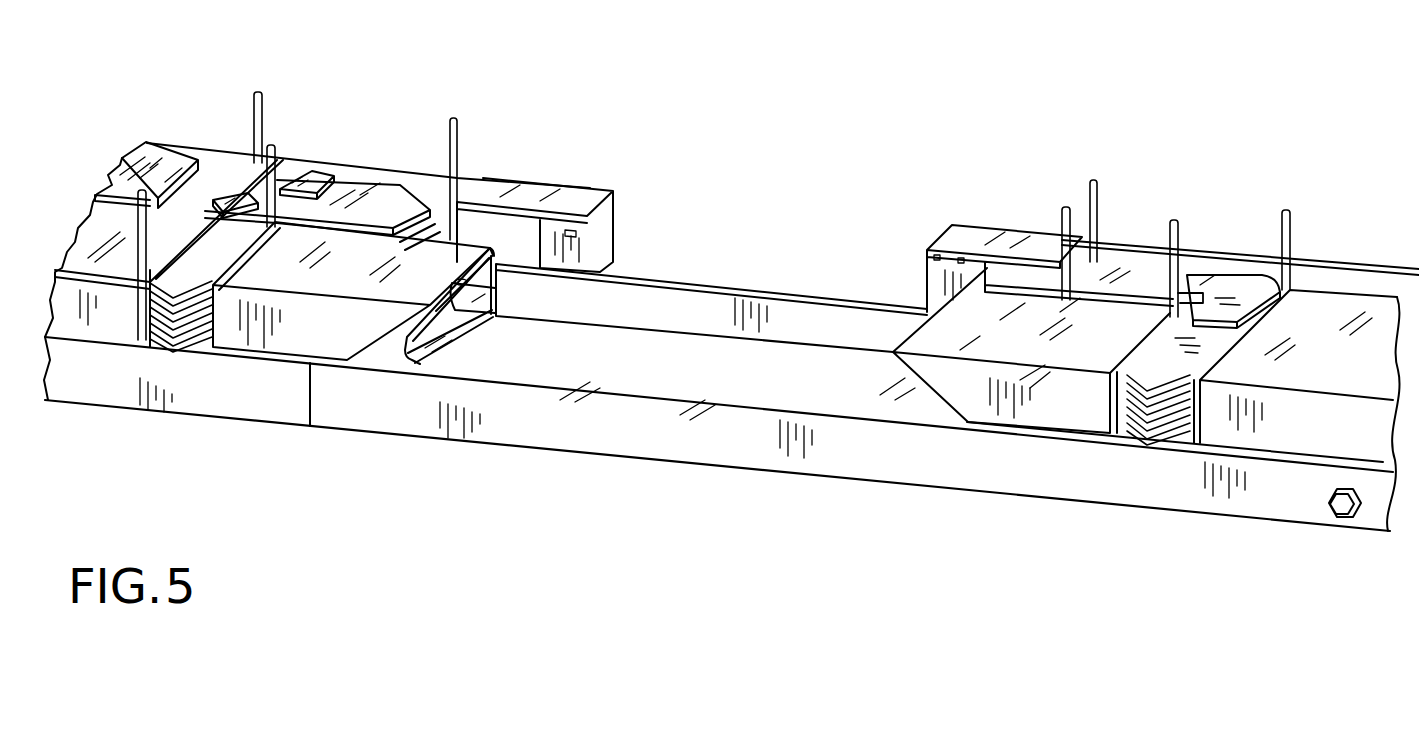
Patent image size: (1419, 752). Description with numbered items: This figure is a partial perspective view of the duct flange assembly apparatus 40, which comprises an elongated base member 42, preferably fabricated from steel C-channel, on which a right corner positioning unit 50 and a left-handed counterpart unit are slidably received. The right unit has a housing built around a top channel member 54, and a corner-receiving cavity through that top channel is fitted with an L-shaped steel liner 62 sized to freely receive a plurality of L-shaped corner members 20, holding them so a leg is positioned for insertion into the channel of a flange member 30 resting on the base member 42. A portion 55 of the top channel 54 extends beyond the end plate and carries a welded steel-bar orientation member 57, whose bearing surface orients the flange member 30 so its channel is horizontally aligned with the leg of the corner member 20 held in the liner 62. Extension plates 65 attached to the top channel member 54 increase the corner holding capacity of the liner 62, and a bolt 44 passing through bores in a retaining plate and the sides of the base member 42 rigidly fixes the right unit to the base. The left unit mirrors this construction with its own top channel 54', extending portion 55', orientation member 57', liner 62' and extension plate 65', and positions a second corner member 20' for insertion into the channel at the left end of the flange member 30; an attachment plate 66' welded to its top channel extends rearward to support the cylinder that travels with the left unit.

The L-shaped corner member 20 is at (670, 399).
The second corner member 20' is at (320, 160).
The flange member 30 is at (724, 270).
The duct flange assembly apparatus 40 is at (484, 464).
The base member 42 is at (728, 452).
The bolt 44 is at (1342, 510).
The right corner positioning unit 50 is at (1126, 161).
The top channel member 54 is at (1295, 366).
The top channel member 54' is at (353, 291).
The portion of the top channel 55 is at (1004, 236).
The portion of the top channel 55' is at (580, 209).
The orientation member 57 is at (899, 275).
The orientation member 57' is at (636, 246).
The liner 62 is at (1132, 254).
The liner 62' is at (383, 191).
The extension plate 65 is at (1056, 186).
The extension plate 65' is at (491, 163).
The attachment plate 66' is at (159, 126).